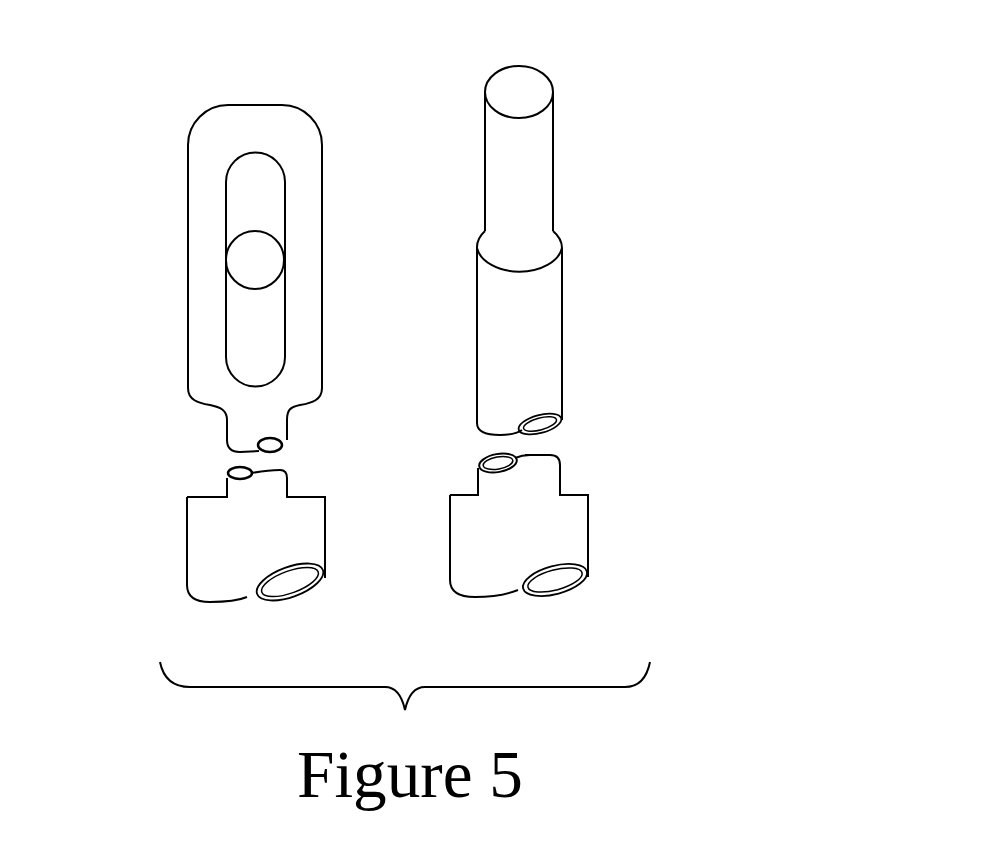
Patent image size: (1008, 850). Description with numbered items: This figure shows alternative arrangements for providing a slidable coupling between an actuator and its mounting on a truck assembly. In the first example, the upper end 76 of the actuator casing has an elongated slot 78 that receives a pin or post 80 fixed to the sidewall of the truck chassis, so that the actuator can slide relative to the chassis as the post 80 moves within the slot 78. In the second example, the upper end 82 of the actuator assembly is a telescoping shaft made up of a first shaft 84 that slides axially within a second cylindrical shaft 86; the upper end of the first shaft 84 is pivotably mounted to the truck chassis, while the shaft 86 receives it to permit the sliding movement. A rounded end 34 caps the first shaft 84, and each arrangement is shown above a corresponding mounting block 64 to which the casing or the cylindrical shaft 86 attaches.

The pin end 34 is at (518, 88).
The connector block 64 is at (227, 543).
The upper end of the actuator casing 76 is at (222, 236).
The slot 78 is at (253, 202).
The pin or post 80 is at (257, 263).
The upper end of the actuator assembly 82 is at (669, 224).
The first shaft 84 is at (600, 121).
The second cylindrical shaft 86 is at (562, 334).